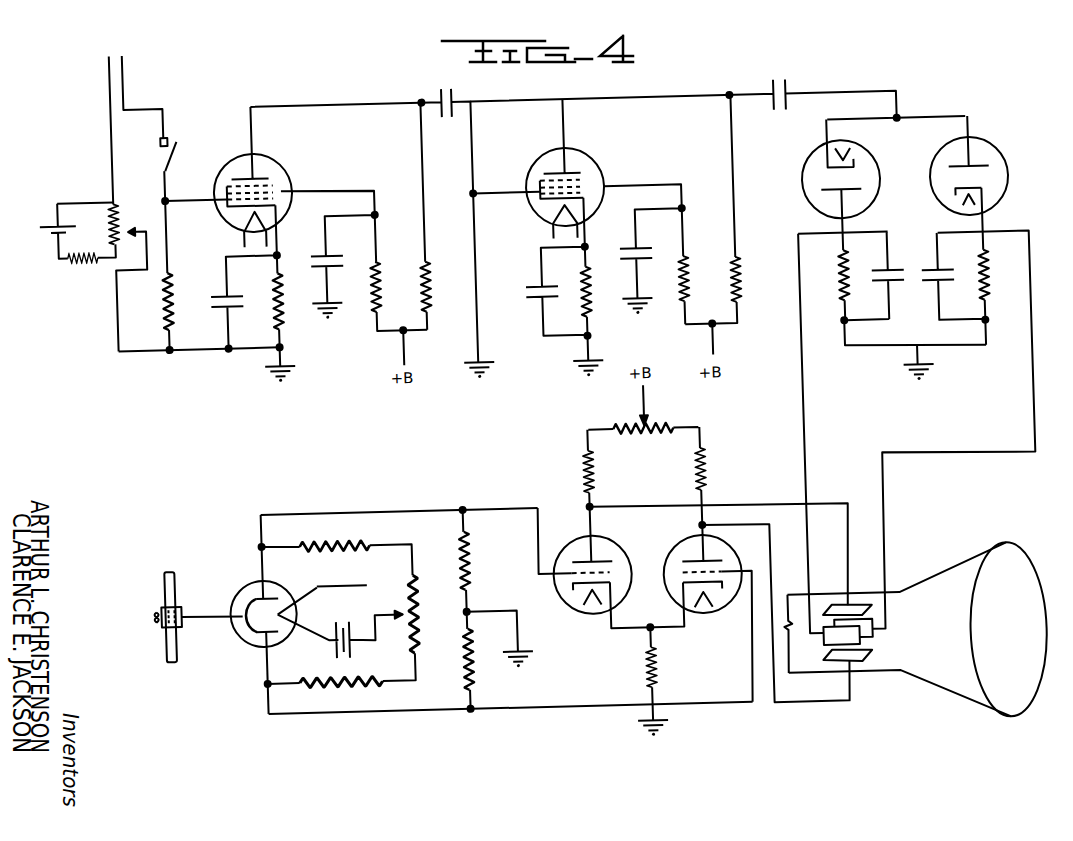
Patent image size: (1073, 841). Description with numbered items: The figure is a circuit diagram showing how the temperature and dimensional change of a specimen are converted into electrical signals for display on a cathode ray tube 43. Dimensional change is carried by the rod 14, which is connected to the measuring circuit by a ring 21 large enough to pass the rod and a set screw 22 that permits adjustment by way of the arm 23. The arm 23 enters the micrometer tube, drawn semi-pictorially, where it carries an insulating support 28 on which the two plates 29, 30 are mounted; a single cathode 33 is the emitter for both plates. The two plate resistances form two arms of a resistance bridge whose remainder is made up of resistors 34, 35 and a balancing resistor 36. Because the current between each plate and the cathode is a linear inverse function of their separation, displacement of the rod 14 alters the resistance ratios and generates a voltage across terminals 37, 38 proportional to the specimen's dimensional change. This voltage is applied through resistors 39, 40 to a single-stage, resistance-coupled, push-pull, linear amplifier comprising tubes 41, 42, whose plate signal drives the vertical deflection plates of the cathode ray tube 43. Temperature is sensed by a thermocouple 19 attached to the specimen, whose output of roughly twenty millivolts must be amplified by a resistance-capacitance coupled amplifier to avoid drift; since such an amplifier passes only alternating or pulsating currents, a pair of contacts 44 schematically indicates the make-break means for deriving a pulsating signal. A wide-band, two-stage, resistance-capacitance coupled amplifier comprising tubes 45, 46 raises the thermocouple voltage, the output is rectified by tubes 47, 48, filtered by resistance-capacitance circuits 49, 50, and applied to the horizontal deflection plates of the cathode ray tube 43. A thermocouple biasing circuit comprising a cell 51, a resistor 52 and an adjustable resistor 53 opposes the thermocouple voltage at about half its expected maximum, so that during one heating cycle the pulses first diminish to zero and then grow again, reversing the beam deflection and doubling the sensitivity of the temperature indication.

The rod 14 is at (163, 581).
The thermocouple 19 is at (119, 101).
The ring 21 is at (157, 617).
The set screw 22 is at (148, 603).
The arm 23 is at (201, 612).
The insulating support 28 is at (237, 604).
The plate 29 is at (249, 593).
The plate 30 is at (250, 628).
The cathode 33 is at (316, 582).
The resistor 34 is at (366, 545).
The resistor 35 is at (347, 681).
The balancing resistor 36 is at (411, 607).
The terminal 37 is at (259, 678).
The terminal 38 is at (256, 538).
The resistor 39 is at (462, 568).
The resistor 40 is at (461, 658).
The amplifier tube 41 is at (566, 609).
The amplifier tube 42 is at (665, 552).
The cathode ray tube 43 is at (935, 702).
The contacts 44 is at (178, 128).
The amplifier tube 45 is at (296, 167).
The amplifier tube 46 is at (605, 169).
The rectifier tube 47 is at (881, 171).
The rectifier tube 48 is at (1009, 168).
The resistance-capacitance filter circuit 49 is at (848, 313).
The resistance-capacitance filter circuit 50 is at (990, 315).
The cell 51 is at (46, 218).
The resistor 52 is at (98, 257).
The adjustable resistor 53 is at (124, 208).